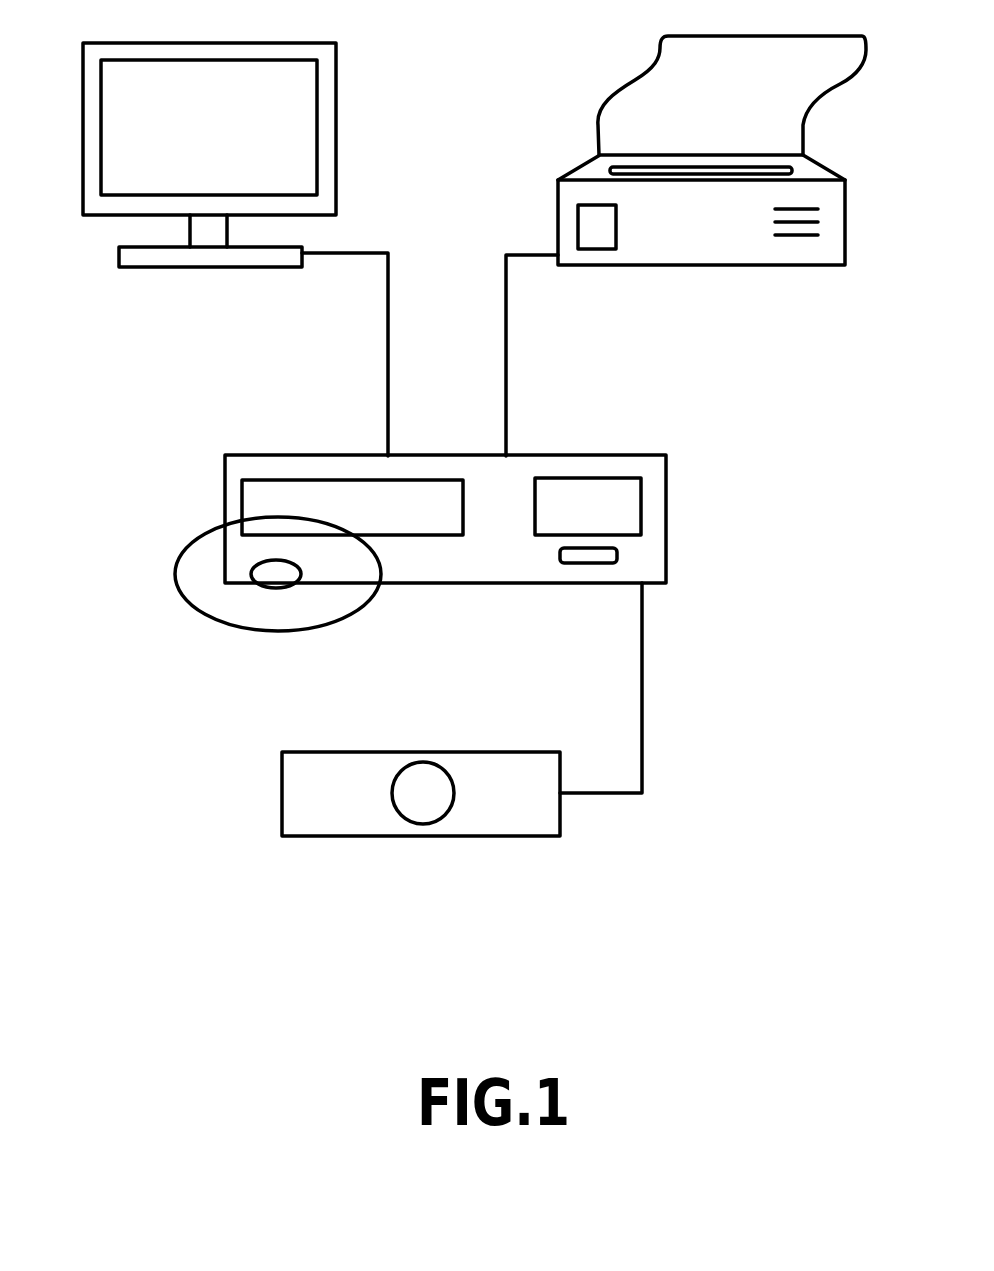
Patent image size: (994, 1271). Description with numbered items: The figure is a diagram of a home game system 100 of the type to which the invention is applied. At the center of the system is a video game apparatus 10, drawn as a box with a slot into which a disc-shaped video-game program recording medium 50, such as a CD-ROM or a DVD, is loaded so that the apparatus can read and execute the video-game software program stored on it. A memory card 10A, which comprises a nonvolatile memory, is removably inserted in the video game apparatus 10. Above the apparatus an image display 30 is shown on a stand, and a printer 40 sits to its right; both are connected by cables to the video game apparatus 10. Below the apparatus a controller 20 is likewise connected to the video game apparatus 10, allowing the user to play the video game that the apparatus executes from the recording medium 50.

The video game apparatus 10 is at (225, 470).
The memory card 10A is at (573, 563).
The controller 20 is at (282, 793).
The image display 30 is at (103, 217).
The printer 40 is at (803, 265).
The video-game program recording medium 50 is at (198, 593).
The home game system 100 is at (708, 628).